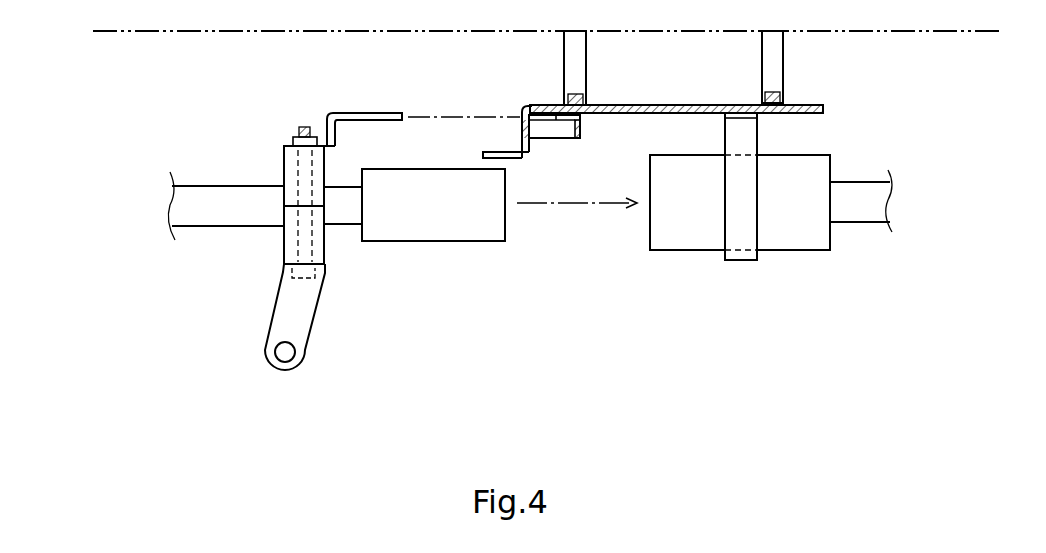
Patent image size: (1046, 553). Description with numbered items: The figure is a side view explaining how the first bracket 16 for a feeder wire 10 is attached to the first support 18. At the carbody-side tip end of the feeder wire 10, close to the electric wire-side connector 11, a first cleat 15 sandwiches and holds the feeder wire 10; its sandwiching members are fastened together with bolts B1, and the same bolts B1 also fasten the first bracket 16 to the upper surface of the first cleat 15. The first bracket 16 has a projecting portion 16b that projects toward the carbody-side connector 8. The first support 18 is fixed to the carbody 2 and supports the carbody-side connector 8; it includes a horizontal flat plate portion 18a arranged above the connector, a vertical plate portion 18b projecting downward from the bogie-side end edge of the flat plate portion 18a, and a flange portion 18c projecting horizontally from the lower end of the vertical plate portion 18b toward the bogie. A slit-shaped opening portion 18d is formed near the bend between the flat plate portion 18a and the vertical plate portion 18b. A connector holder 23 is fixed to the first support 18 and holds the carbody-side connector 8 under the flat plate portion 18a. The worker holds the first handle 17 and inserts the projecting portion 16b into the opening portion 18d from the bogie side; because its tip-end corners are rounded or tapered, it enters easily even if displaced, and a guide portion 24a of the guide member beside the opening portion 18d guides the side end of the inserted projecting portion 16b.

The carbody 2 is at (160, 33).
The carbody-side connector 8 is at (680, 252).
The feeder wire 10 is at (218, 222).
The electric wire-side connector 11 is at (434, 243).
The first cleat 15 is at (293, 170).
The first bracket 16 is at (329, 111).
The projecting portion 16b is at (380, 112).
The first handle 17 is at (279, 373).
The first support 18 is at (627, 114).
The flat plate portion 18a is at (597, 113).
The vertical plate portion 18b is at (555, 118).
The flange portion 18c is at (483, 155).
The opening portion 18d is at (538, 105).
The connector holder 23 is at (742, 262).
The guide portion 24a is at (556, 133).
The bolt B1 is at (305, 127).